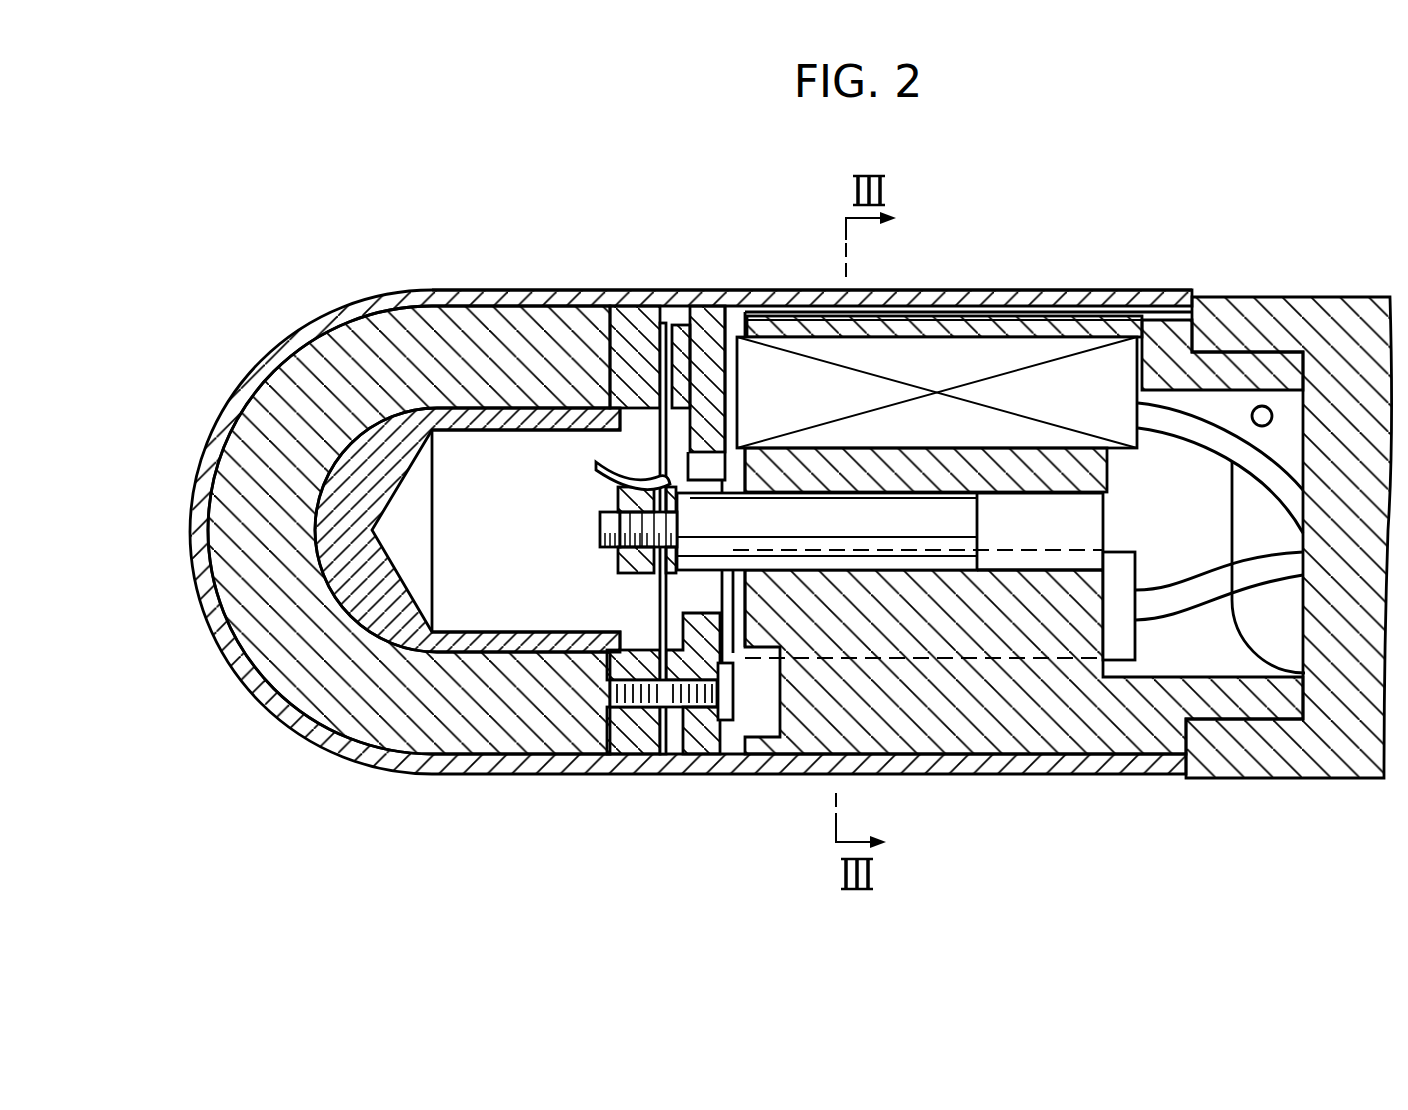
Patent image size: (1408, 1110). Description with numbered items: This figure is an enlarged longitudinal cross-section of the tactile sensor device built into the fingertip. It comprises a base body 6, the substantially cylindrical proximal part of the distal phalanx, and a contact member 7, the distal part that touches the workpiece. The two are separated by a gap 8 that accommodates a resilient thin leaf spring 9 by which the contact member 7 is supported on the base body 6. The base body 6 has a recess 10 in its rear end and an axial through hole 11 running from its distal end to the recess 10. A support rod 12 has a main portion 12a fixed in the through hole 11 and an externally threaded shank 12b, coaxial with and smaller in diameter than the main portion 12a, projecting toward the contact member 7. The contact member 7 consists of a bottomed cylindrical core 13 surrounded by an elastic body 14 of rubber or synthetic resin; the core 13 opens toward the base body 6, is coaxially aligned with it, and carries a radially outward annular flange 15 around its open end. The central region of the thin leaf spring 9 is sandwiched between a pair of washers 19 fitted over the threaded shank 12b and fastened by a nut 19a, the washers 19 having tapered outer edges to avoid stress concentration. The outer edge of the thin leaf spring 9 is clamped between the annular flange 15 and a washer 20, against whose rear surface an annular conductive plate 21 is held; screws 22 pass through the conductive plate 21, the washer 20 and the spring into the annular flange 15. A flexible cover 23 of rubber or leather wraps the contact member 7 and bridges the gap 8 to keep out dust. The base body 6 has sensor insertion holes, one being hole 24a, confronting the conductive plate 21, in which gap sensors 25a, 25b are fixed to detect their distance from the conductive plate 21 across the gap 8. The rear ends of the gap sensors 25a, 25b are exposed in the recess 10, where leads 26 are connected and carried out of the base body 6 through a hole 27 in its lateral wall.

The base body 6 is at (991, 285).
The contact member 7 is at (447, 282).
The gap 8 is at (742, 350).
The thin leaf spring 9 is at (660, 612).
The recess 10 is at (1170, 637).
The axial through hole 11 is at (1035, 565).
The support rod 12 is at (813, 595).
The main portion 12a is at (910, 527).
The externally threaded shank 12b is at (600, 524).
The bottomed cylindrical core 13 is at (380, 610).
The elastic body 14 is at (290, 655).
The annular flange 15 is at (640, 735).
The washers 19 is at (668, 482).
The nut 19a is at (655, 560).
The washer 20 is at (665, 745).
The annular conductive plate 21 is at (700, 722).
The screws 22 is at (728, 700).
The flexible cover 23 is at (578, 292).
The sensor insertion hole 24a is at (1020, 350).
The gap sensor 25a is at (935, 370).
The gap sensor 25b is at (1117, 637).
The leads 26 is at (1197, 433).
The hole 27 is at (1270, 409).